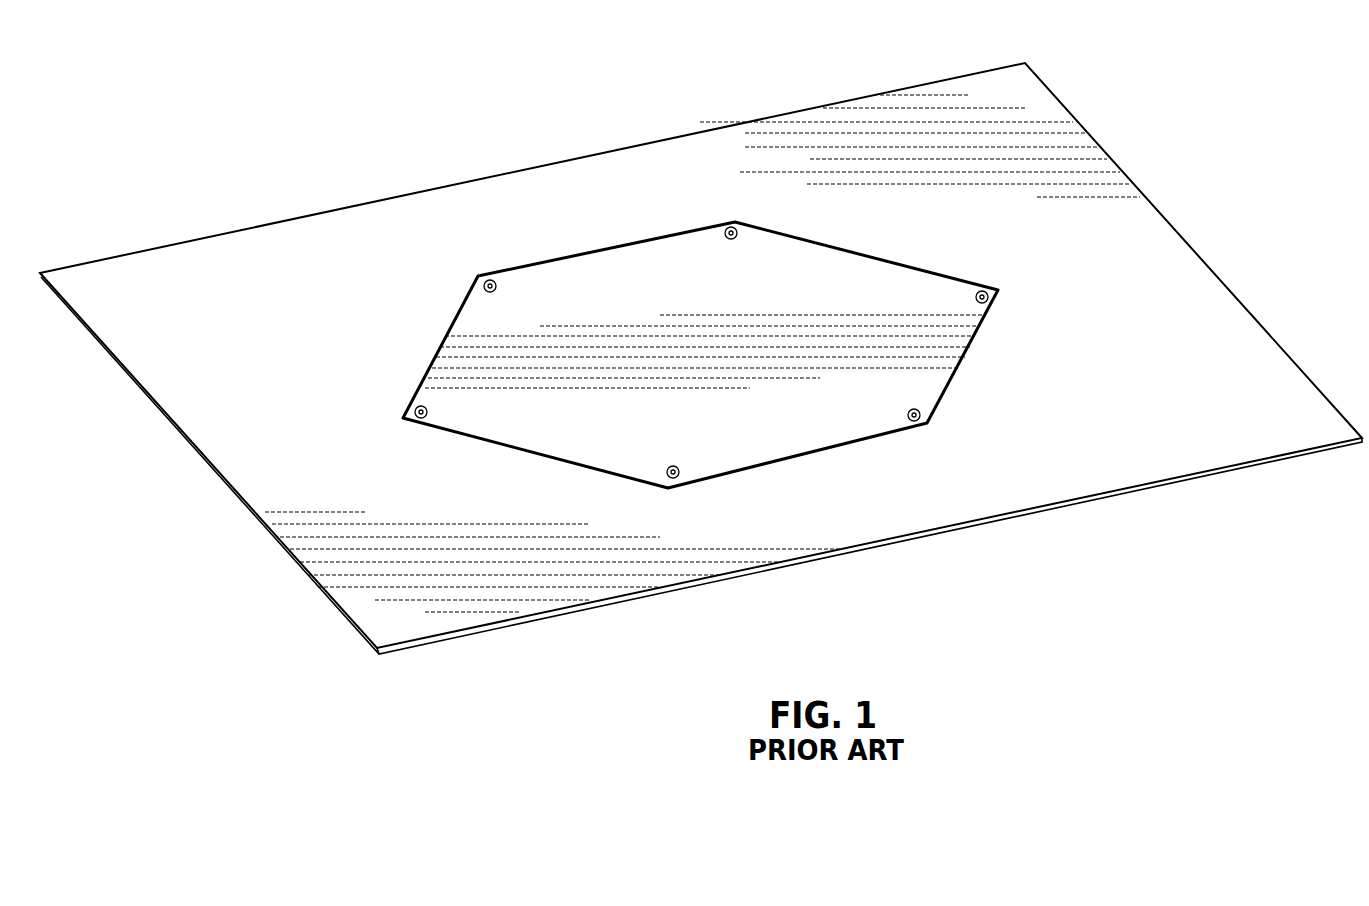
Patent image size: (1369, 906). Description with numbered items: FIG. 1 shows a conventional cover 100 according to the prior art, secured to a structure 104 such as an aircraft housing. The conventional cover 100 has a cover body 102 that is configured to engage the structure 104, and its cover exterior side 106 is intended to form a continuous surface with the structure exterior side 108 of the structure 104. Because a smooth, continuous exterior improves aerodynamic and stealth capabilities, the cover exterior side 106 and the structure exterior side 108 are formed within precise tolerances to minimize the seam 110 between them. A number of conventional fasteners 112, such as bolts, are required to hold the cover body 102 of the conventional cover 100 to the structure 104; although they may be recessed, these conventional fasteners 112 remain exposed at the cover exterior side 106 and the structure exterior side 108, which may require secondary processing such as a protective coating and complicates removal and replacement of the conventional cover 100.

The conventional cover 100 is at (495, 431).
The cover body 102 is at (596, 288).
The structure 104 is at (160, 275).
The cover exterior side 106 is at (535, 283).
The structure exterior side 108 is at (455, 192).
The seam 110 is at (448, 334).
The conventional fasteners 112 is at (740, 223).